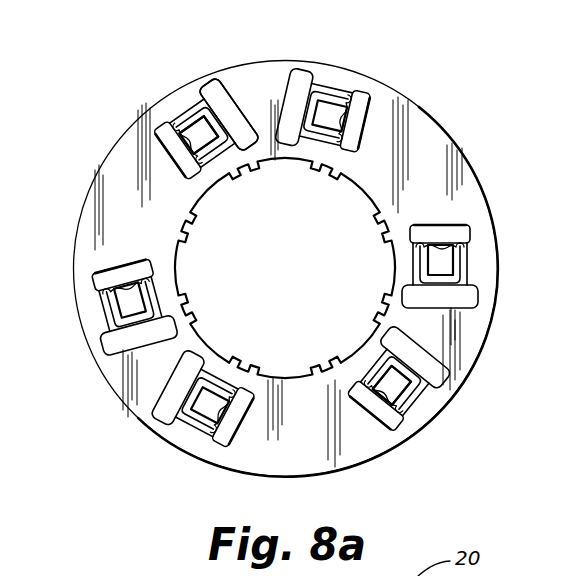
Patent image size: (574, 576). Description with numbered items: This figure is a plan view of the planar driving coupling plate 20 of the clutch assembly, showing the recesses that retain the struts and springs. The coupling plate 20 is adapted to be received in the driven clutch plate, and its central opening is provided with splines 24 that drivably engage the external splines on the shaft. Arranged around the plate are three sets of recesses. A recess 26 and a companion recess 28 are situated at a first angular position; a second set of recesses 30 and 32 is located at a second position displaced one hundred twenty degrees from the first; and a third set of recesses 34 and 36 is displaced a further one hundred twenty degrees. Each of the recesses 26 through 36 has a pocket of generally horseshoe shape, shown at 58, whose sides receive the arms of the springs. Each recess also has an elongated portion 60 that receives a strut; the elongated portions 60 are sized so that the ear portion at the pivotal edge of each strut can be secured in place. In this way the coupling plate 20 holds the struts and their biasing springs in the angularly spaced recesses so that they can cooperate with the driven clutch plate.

The driving coupling plate 20 is at (456, 152).
The splines 24 is at (190, 315).
The recess 26 is at (370, 100).
The recess 28 is at (158, 147).
The recess 30 is at (92, 288).
The recess 32 is at (212, 437).
The recess 34 is at (381, 432).
The recess 36 is at (455, 227).
The horseshoe shape pocket 58 is at (194, 113).
The elongated portion 60 is at (222, 88).